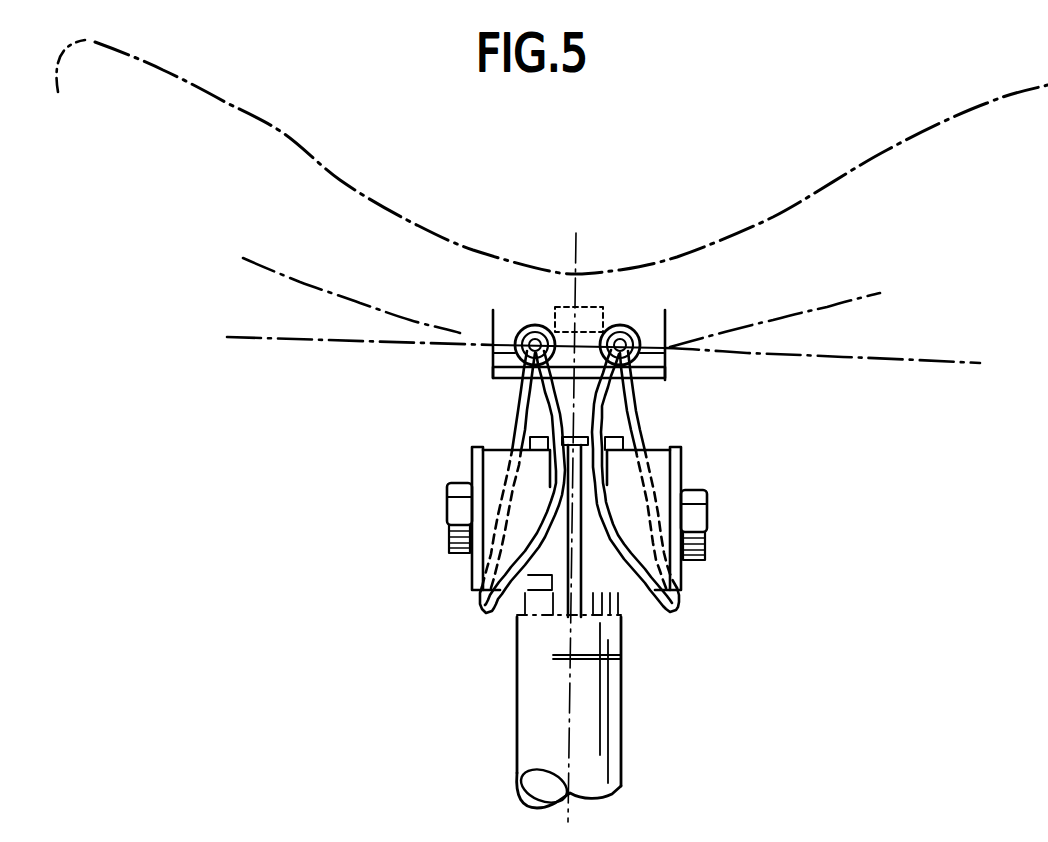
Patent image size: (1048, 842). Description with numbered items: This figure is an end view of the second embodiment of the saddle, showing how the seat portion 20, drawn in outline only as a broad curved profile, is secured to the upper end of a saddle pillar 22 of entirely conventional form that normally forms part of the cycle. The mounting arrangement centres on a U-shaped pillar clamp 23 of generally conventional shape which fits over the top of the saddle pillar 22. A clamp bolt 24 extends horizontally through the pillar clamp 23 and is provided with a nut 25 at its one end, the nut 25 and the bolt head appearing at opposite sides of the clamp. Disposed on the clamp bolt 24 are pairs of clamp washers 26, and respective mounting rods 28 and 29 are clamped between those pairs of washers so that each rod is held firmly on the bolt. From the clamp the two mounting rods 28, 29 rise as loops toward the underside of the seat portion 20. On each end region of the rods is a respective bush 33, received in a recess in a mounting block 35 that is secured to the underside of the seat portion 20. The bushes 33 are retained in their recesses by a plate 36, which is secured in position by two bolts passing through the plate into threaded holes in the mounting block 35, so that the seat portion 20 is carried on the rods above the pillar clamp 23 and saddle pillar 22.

The seat portion 20 is at (677, 250).
The saddle pillar 22 is at (624, 687).
The pillar clamp 23 is at (525, 610).
The clamp bolt 24 is at (708, 530).
The nut 25 is at (453, 485).
The clamp washers 26 is at (470, 566).
The mounting rod 28 is at (517, 418).
The mounting rod 29 is at (637, 427).
The bush 33 is at (492, 357).
The mounting block 35 is at (667, 360).
The plate 36 is at (650, 383).